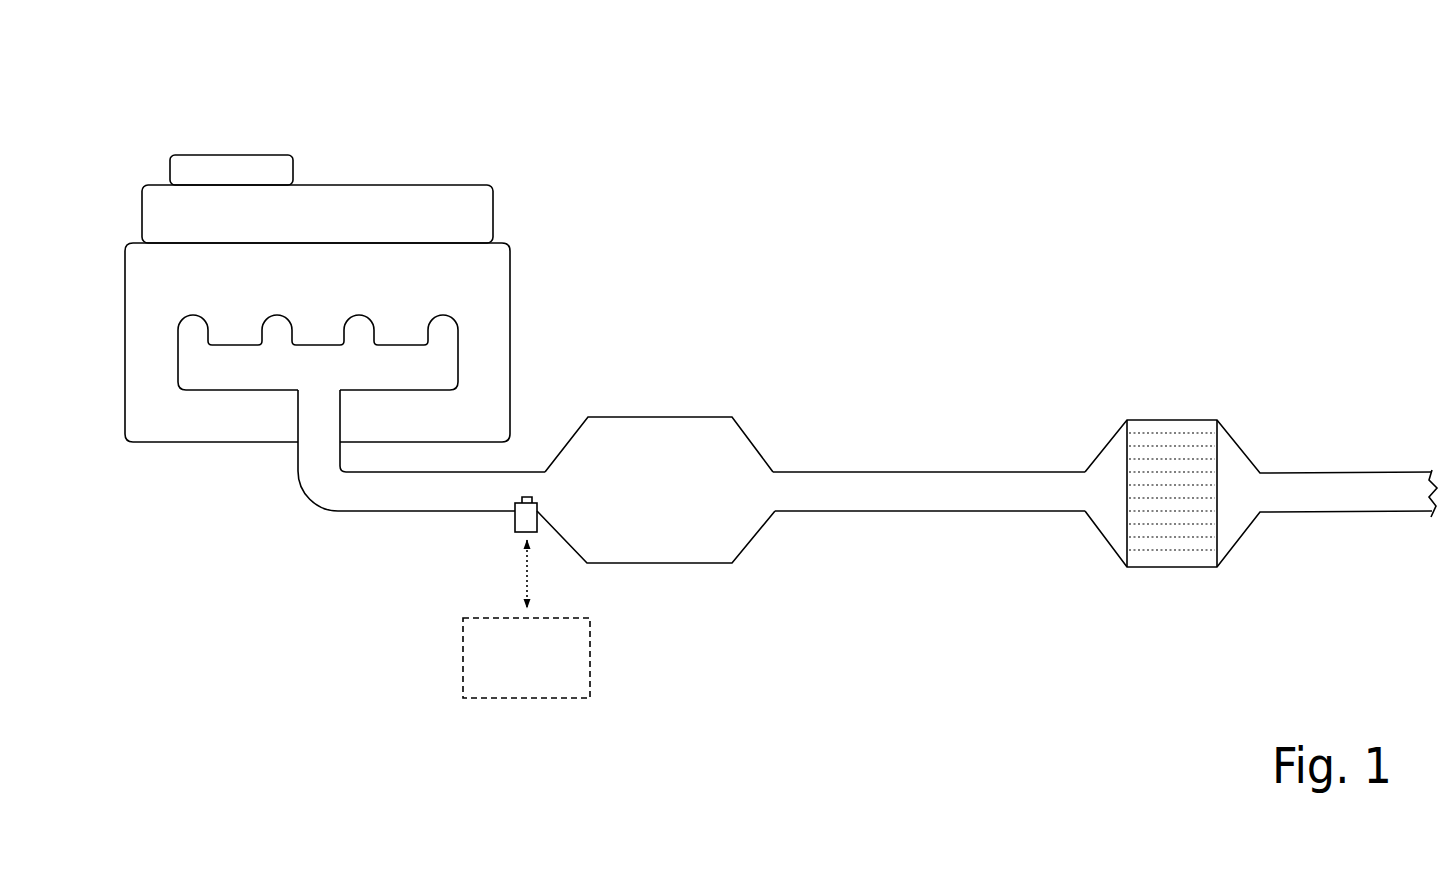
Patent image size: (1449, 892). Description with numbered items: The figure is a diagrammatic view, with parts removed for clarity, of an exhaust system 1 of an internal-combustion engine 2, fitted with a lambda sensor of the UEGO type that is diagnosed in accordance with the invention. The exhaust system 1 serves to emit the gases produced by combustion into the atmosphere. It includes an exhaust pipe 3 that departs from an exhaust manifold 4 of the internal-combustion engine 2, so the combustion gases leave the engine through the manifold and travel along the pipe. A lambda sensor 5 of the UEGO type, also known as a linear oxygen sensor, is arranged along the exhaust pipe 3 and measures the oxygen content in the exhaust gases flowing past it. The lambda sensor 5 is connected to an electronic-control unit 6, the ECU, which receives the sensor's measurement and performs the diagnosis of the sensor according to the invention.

The exhaust system 1 is at (260, 742).
The internal-combustion engine 2 is at (417, 105).
The exhaust pipe 3 is at (818, 662).
The exhaust manifold 4 is at (230, 372).
The lambda sensor 5 is at (525, 513).
The electronic-control unit 6 is at (526, 619).